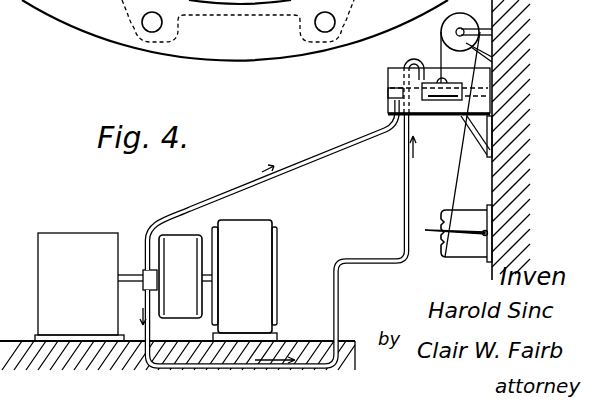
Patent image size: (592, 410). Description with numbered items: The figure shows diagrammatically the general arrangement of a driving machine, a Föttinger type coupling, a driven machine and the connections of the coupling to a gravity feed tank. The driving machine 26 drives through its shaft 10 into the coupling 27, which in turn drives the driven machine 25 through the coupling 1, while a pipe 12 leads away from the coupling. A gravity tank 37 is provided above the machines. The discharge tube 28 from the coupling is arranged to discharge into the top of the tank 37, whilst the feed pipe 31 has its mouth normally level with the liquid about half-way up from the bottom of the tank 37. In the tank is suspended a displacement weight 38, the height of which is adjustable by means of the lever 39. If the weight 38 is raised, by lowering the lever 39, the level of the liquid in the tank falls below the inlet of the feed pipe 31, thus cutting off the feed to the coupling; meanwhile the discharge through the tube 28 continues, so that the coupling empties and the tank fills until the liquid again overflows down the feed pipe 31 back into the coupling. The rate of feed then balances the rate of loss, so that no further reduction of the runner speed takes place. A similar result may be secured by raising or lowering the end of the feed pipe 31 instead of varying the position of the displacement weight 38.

The coupling 1 is at (211, 272).
The motor shaft 10 is at (125, 279).
The suction pipe 12 is at (157, 291).
The driven device 25 is at (244, 280).
The motor 26 is at (79, 287).
The pump 27 is at (172, 276).
The discharge tube 28 is at (404, 206).
The feed pipe 31 is at (239, 191).
The gravity tank 37 is at (388, 80).
The displacement weight 38 is at (463, 86).
The lever 39 is at (450, 258).